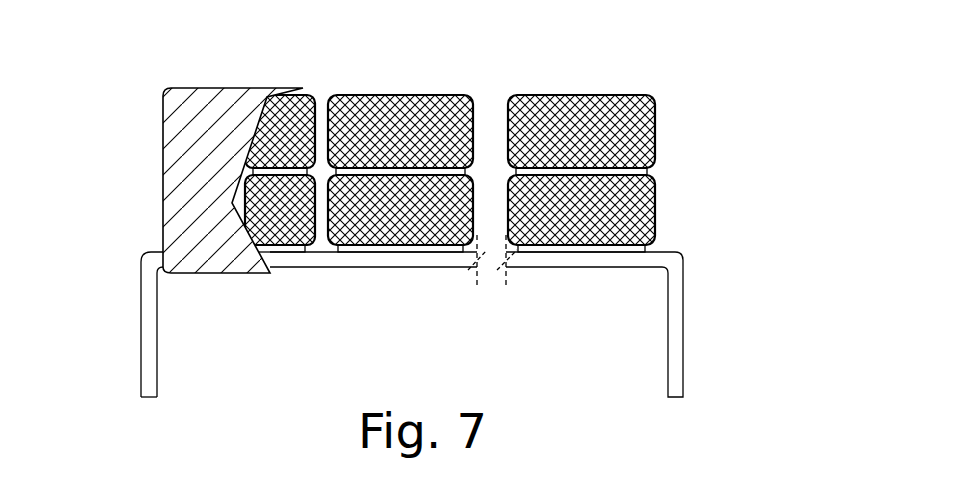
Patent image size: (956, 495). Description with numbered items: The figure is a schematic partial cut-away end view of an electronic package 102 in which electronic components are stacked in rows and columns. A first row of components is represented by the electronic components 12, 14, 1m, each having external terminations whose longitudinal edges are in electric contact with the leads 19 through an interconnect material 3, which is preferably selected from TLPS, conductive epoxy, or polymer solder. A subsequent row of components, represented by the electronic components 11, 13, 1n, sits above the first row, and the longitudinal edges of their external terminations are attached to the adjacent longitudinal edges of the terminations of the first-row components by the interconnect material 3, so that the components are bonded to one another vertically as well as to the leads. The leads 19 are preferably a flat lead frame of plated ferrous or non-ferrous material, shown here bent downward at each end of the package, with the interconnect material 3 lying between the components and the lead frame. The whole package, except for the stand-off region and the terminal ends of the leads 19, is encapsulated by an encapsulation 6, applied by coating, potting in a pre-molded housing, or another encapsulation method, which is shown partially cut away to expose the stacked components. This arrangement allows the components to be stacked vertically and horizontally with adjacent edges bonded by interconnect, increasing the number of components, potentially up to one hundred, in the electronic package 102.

The electronic component 11 is at (300, 118).
The electronic component 12 is at (260, 212).
The electronic component 13 is at (443, 117).
The electronic component 14 is at (437, 237).
The electronic component 1n is at (608, 115).
The electronic component 1m is at (635, 216).
The interconnect material 3 is at (378, 250).
The encapsulation 6 is at (185, 166).
The lead 19 is at (148, 373).
The electronic package 102 is at (718, 83).